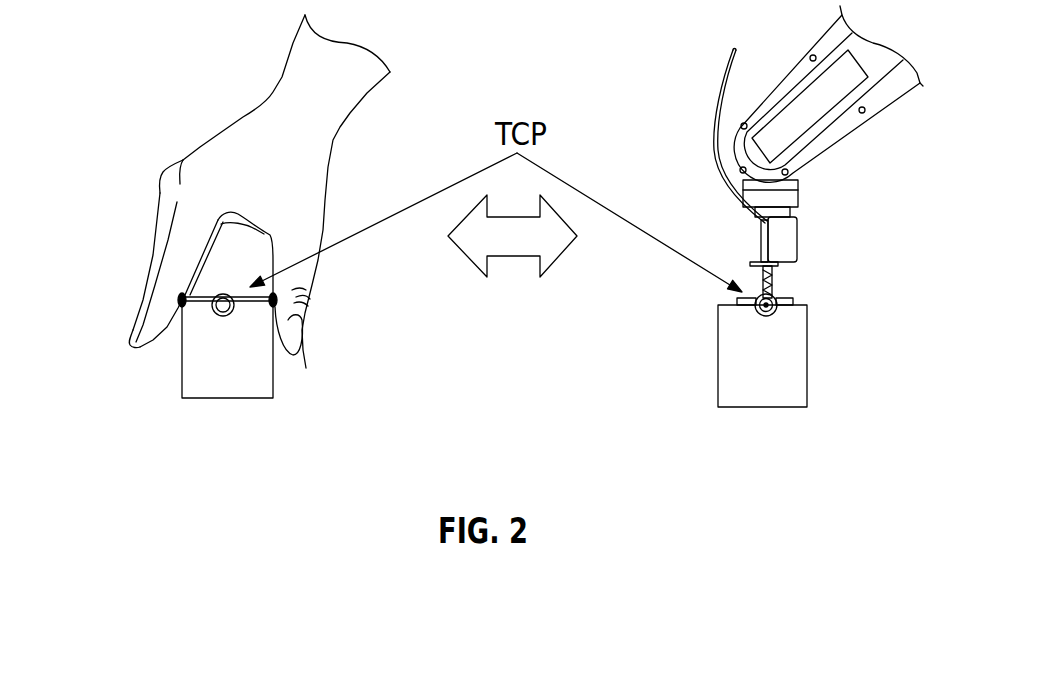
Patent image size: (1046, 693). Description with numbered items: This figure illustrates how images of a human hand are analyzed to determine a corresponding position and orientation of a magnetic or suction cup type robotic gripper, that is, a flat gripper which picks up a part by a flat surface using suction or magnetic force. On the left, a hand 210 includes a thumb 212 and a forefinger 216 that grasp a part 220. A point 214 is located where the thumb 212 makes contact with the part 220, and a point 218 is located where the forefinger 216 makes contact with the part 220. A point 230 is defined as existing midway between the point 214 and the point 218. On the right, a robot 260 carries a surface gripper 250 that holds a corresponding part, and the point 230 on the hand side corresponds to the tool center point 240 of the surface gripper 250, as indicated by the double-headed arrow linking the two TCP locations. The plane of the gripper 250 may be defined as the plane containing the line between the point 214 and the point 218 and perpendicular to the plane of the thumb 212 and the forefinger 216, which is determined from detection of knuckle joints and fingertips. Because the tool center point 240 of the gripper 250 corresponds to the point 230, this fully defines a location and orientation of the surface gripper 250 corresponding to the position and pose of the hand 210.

The hand 210 is at (333, 114).
The thumb 212 is at (308, 305).
The point 214 is at (303, 350).
The forefinger 216 is at (137, 294).
The point 218 is at (173, 327).
The part 220 is at (226, 400).
The point 230 is at (223, 295).
The tool center point 240 is at (777, 307).
The surface gripper 250 is at (784, 298).
The robot 260 is at (840, 160).